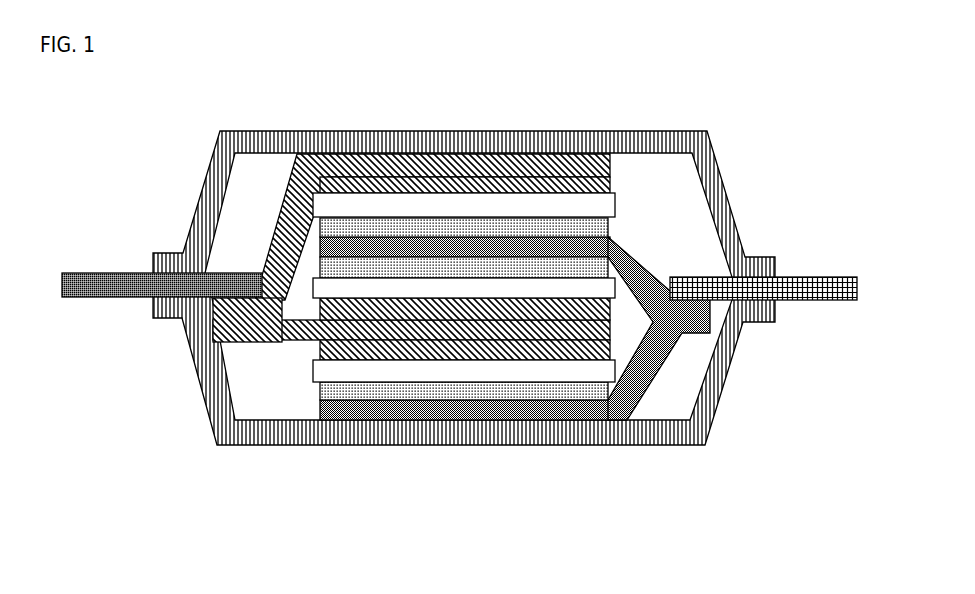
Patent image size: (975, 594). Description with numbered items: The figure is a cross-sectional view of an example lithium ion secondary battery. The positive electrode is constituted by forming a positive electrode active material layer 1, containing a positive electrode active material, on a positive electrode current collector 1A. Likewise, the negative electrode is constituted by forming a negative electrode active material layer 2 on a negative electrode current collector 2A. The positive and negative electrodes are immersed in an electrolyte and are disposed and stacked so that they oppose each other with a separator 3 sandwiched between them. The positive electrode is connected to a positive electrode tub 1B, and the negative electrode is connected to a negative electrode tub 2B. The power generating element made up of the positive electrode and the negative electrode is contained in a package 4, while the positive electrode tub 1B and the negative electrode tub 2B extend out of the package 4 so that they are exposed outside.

The positive electrode active material layer 1 is at (593, 228).
The positive electrode current collector 1A is at (535, 243).
The positive electrode tub 1B is at (763, 288).
The negative electrode active material layer 2 is at (355, 182).
The negative electrode current collector 2A is at (230, 330).
The negative electrode tub 2B is at (157, 292).
The separator 3 is at (325, 372).
The package 4 is at (218, 433).